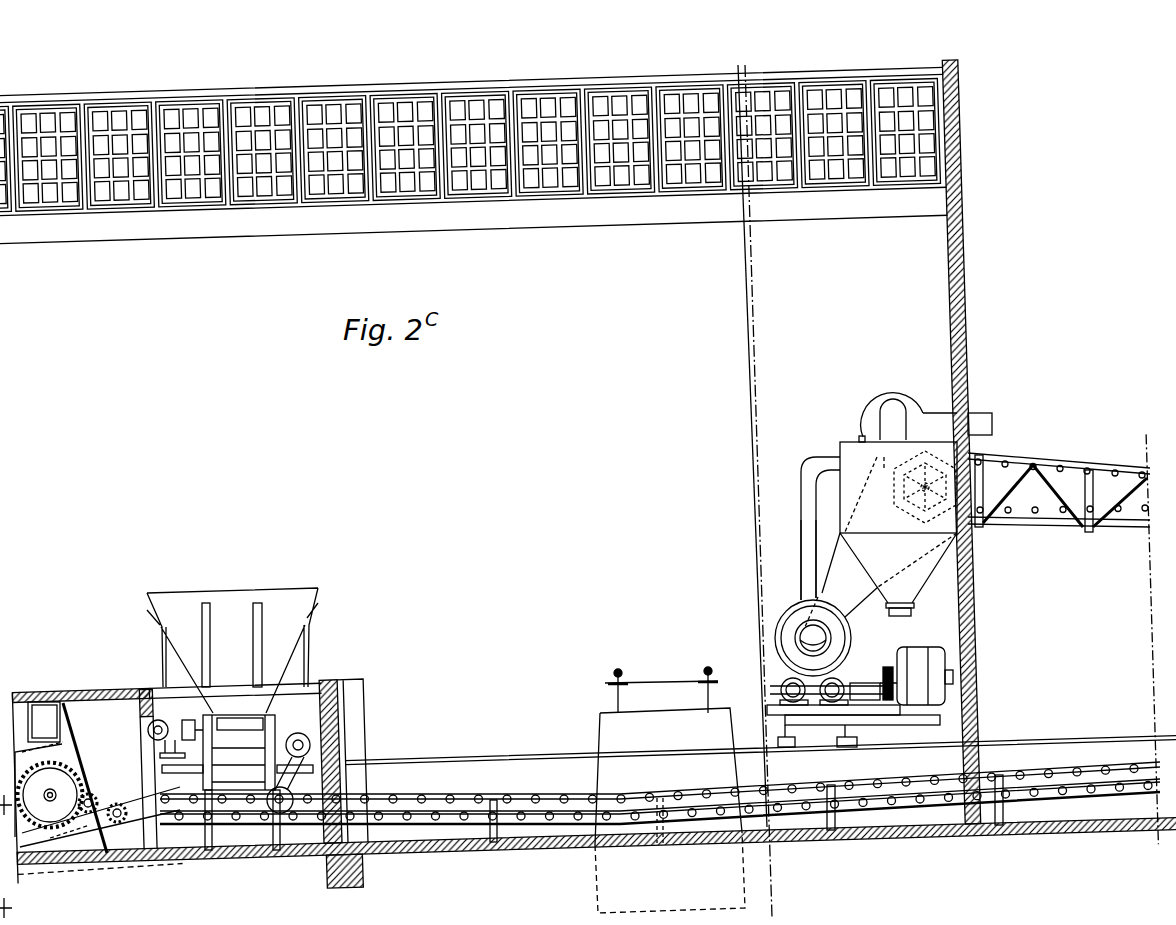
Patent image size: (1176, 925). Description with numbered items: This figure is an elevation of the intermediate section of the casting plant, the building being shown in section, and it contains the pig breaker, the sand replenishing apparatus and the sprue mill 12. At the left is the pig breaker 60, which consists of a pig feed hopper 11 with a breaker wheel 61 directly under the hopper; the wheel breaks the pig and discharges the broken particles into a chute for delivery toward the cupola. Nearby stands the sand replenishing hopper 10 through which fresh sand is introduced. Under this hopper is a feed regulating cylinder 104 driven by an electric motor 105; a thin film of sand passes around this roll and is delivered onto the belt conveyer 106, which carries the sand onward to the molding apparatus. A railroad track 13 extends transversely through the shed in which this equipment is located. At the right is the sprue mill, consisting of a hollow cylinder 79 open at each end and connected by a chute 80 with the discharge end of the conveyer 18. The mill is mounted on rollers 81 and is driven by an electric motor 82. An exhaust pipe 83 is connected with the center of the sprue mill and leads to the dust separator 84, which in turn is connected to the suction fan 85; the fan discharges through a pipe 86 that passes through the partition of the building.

The sand replenishing hopper 10 is at (185, 597).
The pig feed hopper 11 is at (44, 722).
The sprue mill 12 is at (796, 550).
The railroad track 13 is at (670, 787).
The conveyer 18 is at (1072, 464).
The pig breaker 60 is at (52, 778).
The breaker wheel 61 is at (85, 771).
The hollow cylinder 79 is at (824, 638).
The chute 80 is at (889, 575).
The rollers 81 is at (853, 709).
The electric motor 82 is at (916, 667).
The exhaust pipe 83 is at (806, 482).
The dust separator 84 is at (898, 487).
The suction fan 85 is at (908, 417).
The pipe 86 is at (981, 415).
The feed regulating cylinder 104 is at (258, 782).
The electric motor 105 is at (175, 733).
The belt conveyer 106 is at (660, 802).